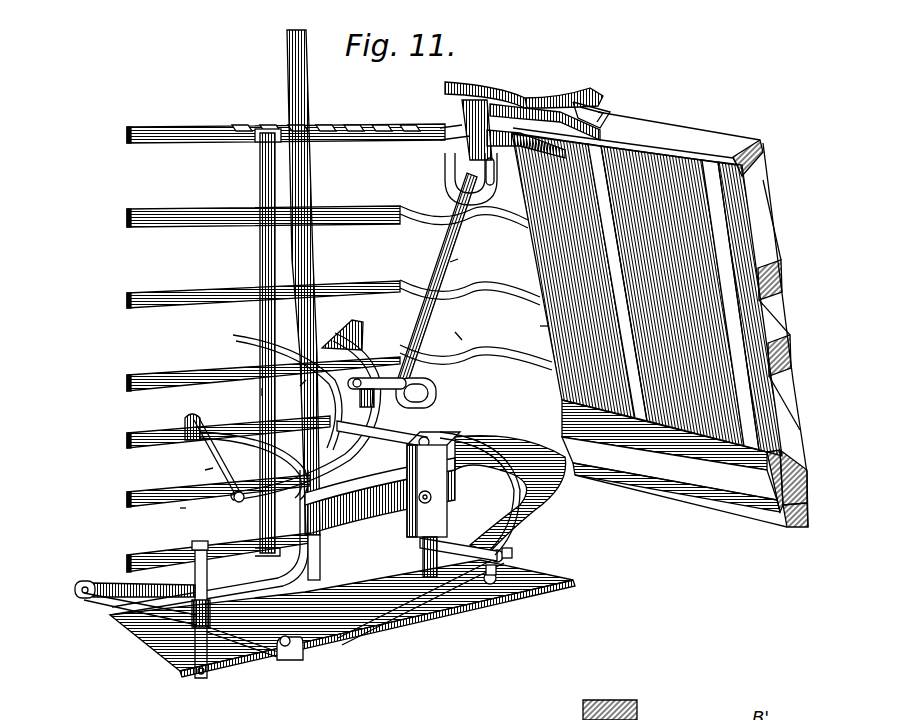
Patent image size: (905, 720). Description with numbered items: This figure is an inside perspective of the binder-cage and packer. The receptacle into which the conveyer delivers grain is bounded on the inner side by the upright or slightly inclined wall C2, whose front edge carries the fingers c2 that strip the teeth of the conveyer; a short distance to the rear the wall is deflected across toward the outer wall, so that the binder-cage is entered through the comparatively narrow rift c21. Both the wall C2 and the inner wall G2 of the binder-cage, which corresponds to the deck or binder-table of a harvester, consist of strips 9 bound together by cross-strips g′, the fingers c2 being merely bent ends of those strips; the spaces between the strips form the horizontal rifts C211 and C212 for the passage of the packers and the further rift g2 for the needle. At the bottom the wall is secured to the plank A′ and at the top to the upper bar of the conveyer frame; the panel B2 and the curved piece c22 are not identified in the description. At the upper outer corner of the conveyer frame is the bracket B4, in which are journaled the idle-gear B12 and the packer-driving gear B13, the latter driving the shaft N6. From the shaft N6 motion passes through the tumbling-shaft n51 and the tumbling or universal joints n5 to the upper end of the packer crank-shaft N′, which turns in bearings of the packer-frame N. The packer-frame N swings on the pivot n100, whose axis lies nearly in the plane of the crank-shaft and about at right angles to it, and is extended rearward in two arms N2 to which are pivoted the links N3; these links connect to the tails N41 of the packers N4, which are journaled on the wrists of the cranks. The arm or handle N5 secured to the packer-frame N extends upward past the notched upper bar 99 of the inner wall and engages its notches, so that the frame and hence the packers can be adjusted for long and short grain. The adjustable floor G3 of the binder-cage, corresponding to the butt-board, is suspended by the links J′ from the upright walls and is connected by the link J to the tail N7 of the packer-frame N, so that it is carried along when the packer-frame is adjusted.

The frame panel B2 is at (652, 320).
The plank A′ is at (675, 485).
The packer-driving gear B13 is at (468, 88).
The shaft N6 is at (500, 95).
The idle-gear B12 is at (560, 94).
The bracket B4 is at (462, 118).
The notched upper bar 99 is at (232, 138).
The strips 9 is at (235, 228).
The cross-strips g′ is at (262, 392).
The arm or handle N5 is at (306, 100).
The arms N2 is at (255, 446).
The links J′ is at (318, 560).
The tail of packer N41 is at (392, 653).
The packer-frame N is at (380, 496).
The inner wall G2 is at (233, 336).
The packers N4 is at (576, 497).
The rift C211 is at (179, 414).
The links N3 is at (225, 468).
The rift g2 is at (194, 462).
The rift c21 is at (294, 391).
The rift C212 is at (175, 519).
The adjustable floor G3 is at (290, 662).
The link J is at (122, 584).
The tail of packer-frame N7 is at (143, 627).
The tumbling or universal joints n5 is at (445, 180).
The tumbling-shaft n51 is at (452, 262).
The fingers c2 is at (476, 293).
The inner wall C2 is at (461, 328).
The packer crank-shaft N′ is at (440, 458).
The pivot n100 is at (418, 503).
The curved guide rail c22 is at (369, 493).